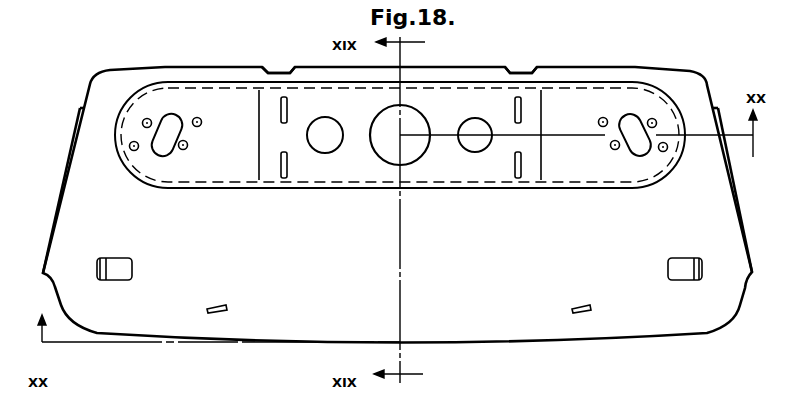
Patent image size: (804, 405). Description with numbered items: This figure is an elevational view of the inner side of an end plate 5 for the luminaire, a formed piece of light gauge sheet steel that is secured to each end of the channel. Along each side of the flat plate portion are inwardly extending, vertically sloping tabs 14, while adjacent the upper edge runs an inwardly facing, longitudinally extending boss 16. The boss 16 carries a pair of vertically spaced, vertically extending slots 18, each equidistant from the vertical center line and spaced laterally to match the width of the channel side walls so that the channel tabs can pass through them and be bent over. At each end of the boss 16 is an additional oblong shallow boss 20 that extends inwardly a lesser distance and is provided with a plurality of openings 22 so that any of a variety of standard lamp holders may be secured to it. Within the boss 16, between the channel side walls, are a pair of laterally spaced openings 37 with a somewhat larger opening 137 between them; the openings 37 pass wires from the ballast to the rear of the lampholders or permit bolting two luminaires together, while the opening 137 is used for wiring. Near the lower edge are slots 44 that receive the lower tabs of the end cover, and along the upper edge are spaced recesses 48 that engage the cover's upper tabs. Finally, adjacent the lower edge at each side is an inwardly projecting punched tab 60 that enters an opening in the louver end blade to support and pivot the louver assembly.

The end plate 5 is at (440, 272).
The vertically sloping tabs 14 is at (61, 214).
The boss 16 is at (373, 184).
The slots 18 is at (288, 128).
The shallow boss 20 is at (195, 189).
The openings 22 is at (196, 118).
The openings 37 is at (338, 122).
The opening 137 is at (412, 150).
The slots 44 is at (226, 307).
The recesses 48 is at (269, 71).
The tab 60 is at (105, 258).